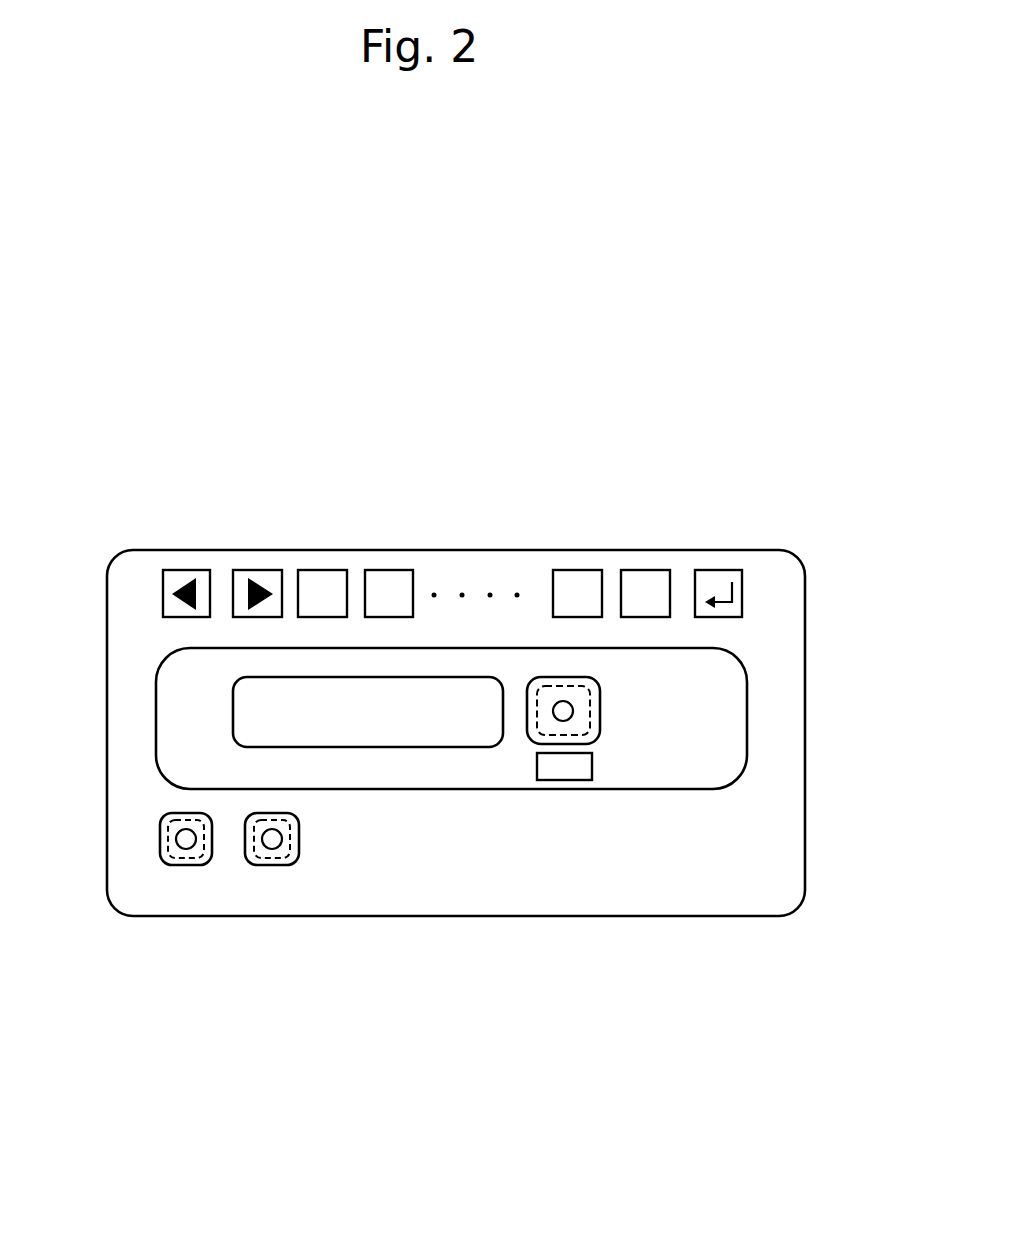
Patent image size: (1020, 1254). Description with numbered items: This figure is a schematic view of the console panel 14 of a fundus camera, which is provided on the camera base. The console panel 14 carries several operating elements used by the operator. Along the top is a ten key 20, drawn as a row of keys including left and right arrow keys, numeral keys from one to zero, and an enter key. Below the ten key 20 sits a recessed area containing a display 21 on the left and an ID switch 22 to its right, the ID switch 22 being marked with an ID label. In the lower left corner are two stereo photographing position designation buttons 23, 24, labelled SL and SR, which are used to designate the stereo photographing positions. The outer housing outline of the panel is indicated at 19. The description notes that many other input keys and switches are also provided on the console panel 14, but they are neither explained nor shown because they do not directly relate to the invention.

The console panel 14 is at (694, 932).
The panel housing 19 is at (805, 785).
The ten key 20 is at (567, 551).
The display 21 is at (252, 723).
The ID switch 22 is at (577, 677).
The stereo photographing position designation button 23 is at (155, 870).
The stereo photographing position designation button 24 is at (298, 857).